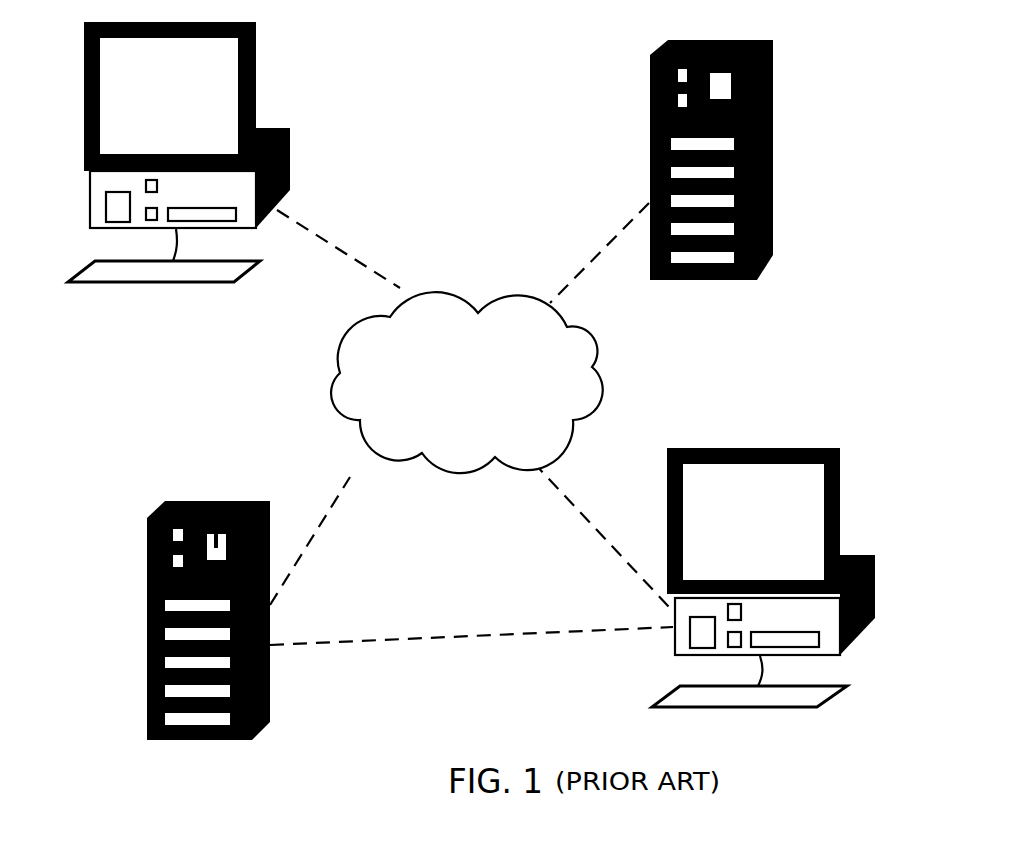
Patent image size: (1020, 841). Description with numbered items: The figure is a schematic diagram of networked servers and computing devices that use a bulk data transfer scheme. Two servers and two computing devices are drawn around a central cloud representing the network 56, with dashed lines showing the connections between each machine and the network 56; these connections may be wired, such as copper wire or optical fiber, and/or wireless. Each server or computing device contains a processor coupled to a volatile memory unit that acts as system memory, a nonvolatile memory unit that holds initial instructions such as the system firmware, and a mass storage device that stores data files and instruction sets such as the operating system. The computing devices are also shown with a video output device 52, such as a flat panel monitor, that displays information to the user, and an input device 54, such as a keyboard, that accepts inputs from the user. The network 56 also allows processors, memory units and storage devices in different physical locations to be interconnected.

The video output device 52 is at (181, 110).
The input device 54 is at (90, 273).
The network 56 is at (454, 409).